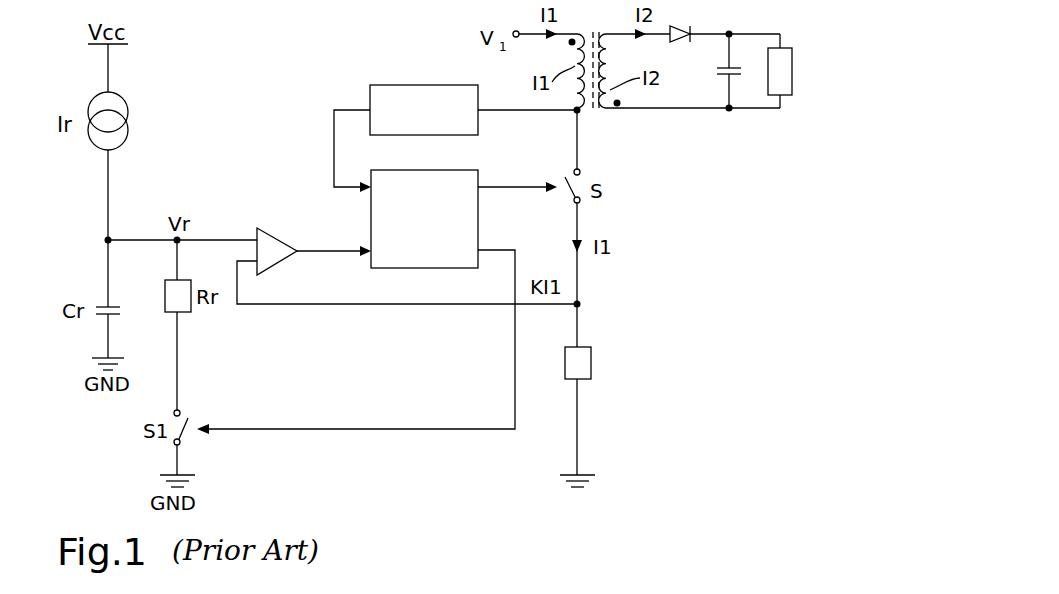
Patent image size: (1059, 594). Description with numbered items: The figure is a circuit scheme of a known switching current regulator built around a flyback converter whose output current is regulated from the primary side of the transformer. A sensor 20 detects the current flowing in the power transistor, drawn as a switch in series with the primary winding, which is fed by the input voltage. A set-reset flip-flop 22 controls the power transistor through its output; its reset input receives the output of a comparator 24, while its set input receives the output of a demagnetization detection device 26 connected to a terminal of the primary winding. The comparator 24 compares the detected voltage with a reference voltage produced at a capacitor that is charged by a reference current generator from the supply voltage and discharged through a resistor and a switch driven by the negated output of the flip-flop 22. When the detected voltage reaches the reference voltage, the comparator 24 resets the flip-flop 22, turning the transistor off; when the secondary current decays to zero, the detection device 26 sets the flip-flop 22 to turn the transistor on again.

The sensor 20 is at (583, 361).
The set-reset flip-flop 22 is at (452, 178).
The comparator 24 is at (275, 240).
The demagnetization detection device 26 is at (418, 82).